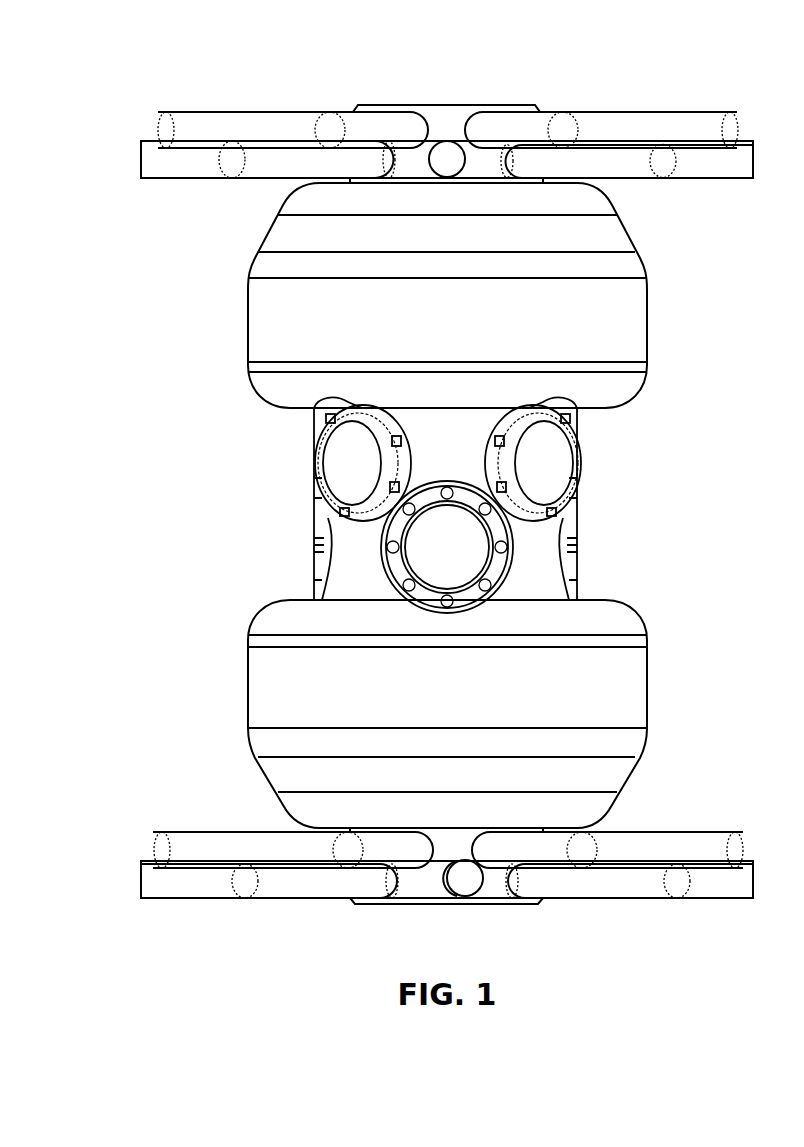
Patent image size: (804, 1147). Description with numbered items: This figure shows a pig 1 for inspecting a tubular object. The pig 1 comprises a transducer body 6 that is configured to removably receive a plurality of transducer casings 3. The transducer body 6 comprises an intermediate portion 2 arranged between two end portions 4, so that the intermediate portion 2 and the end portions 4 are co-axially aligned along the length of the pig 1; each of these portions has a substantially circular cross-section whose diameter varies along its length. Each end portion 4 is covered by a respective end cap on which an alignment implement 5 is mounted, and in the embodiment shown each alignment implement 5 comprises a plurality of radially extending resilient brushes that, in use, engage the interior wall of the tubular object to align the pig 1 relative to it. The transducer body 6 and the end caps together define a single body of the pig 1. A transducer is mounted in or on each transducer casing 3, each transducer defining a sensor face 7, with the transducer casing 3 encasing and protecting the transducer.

The pig 1 is at (687, 67).
The intermediate portion 2 is at (168, 505).
The transducer casing 3 is at (317, 442).
The end portion 4 is at (233, 288).
The alignment implement 5 is at (713, 162).
The transducer body 6 is at (365, 583).
The sensor face 7 is at (342, 465).